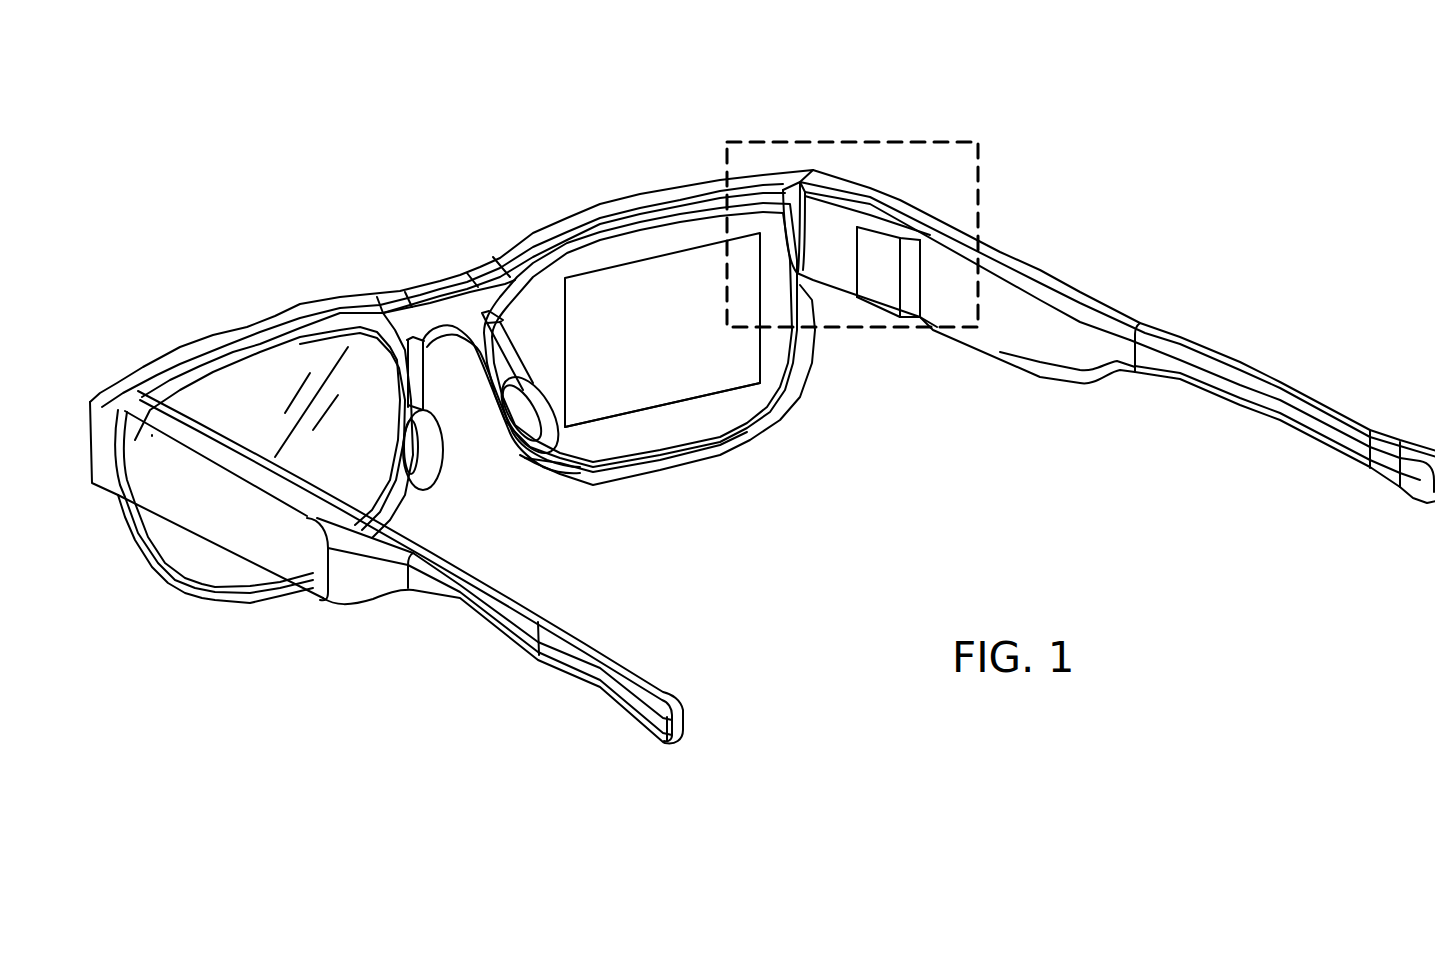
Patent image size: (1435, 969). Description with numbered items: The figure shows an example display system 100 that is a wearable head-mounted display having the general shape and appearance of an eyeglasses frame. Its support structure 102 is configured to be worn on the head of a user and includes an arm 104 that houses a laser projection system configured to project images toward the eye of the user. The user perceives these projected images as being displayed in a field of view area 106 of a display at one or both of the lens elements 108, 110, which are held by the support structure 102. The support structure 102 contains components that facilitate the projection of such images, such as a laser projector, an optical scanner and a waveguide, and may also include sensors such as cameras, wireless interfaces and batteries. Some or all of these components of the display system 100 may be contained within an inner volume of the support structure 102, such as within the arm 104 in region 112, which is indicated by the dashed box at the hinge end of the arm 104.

The display system 100 is at (371, 139).
The support structure 102 is at (408, 293).
The arm 104 is at (1067, 278).
The field of view (FOV) area 106 is at (647, 257).
The lens element 108 is at (237, 380).
The lens element 110 is at (673, 430).
The region 112 is at (910, 142).